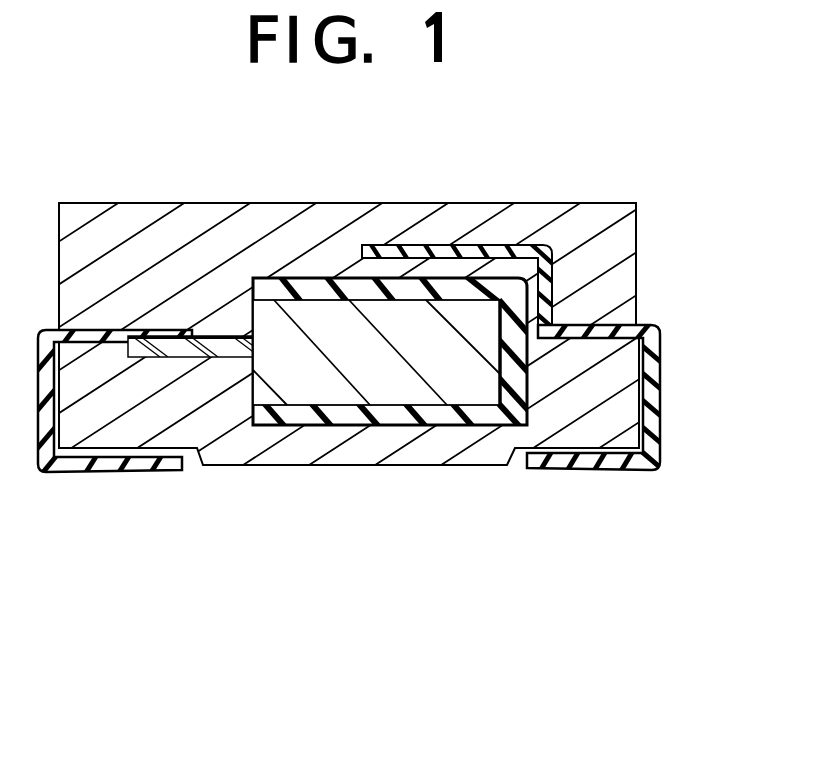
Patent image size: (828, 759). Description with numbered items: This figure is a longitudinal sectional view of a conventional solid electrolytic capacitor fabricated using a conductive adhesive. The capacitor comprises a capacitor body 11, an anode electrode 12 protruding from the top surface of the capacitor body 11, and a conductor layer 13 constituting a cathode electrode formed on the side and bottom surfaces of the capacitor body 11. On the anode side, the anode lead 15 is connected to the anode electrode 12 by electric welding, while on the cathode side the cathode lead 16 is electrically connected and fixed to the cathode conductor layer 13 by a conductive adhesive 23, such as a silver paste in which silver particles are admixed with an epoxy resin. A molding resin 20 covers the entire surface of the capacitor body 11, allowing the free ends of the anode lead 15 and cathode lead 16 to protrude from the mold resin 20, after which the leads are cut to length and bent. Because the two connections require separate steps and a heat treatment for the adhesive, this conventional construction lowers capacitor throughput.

The capacitor body 11 is at (330, 380).
The anode electrode 12 is at (222, 357).
The conductor layer 13 is at (452, 412).
The anode lead 15 is at (105, 473).
The cathode lead 16 is at (662, 433).
The molding resin 20 is at (620, 257).
The conductive adhesive 23 is at (484, 276).